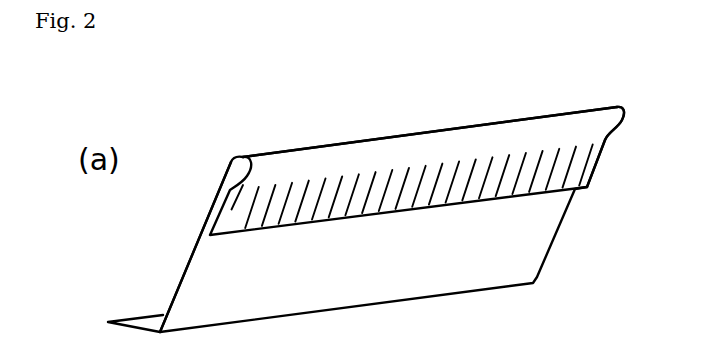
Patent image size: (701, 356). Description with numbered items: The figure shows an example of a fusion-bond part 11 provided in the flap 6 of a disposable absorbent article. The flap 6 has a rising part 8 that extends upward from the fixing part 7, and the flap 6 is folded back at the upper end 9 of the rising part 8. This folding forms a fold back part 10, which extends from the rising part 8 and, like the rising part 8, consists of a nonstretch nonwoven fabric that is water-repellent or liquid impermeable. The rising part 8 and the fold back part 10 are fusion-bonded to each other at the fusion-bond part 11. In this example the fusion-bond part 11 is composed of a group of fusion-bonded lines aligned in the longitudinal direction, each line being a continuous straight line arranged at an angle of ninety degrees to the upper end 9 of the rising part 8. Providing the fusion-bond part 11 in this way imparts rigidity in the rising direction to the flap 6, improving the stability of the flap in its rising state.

The flap 6 is at (192, 184).
The fixing part 7 is at (152, 314).
The rising part 8 is at (190, 259).
The upper end 9 is at (388, 137).
The fold back part 10 is at (591, 165).
The fusion-bond part 11 is at (350, 203).